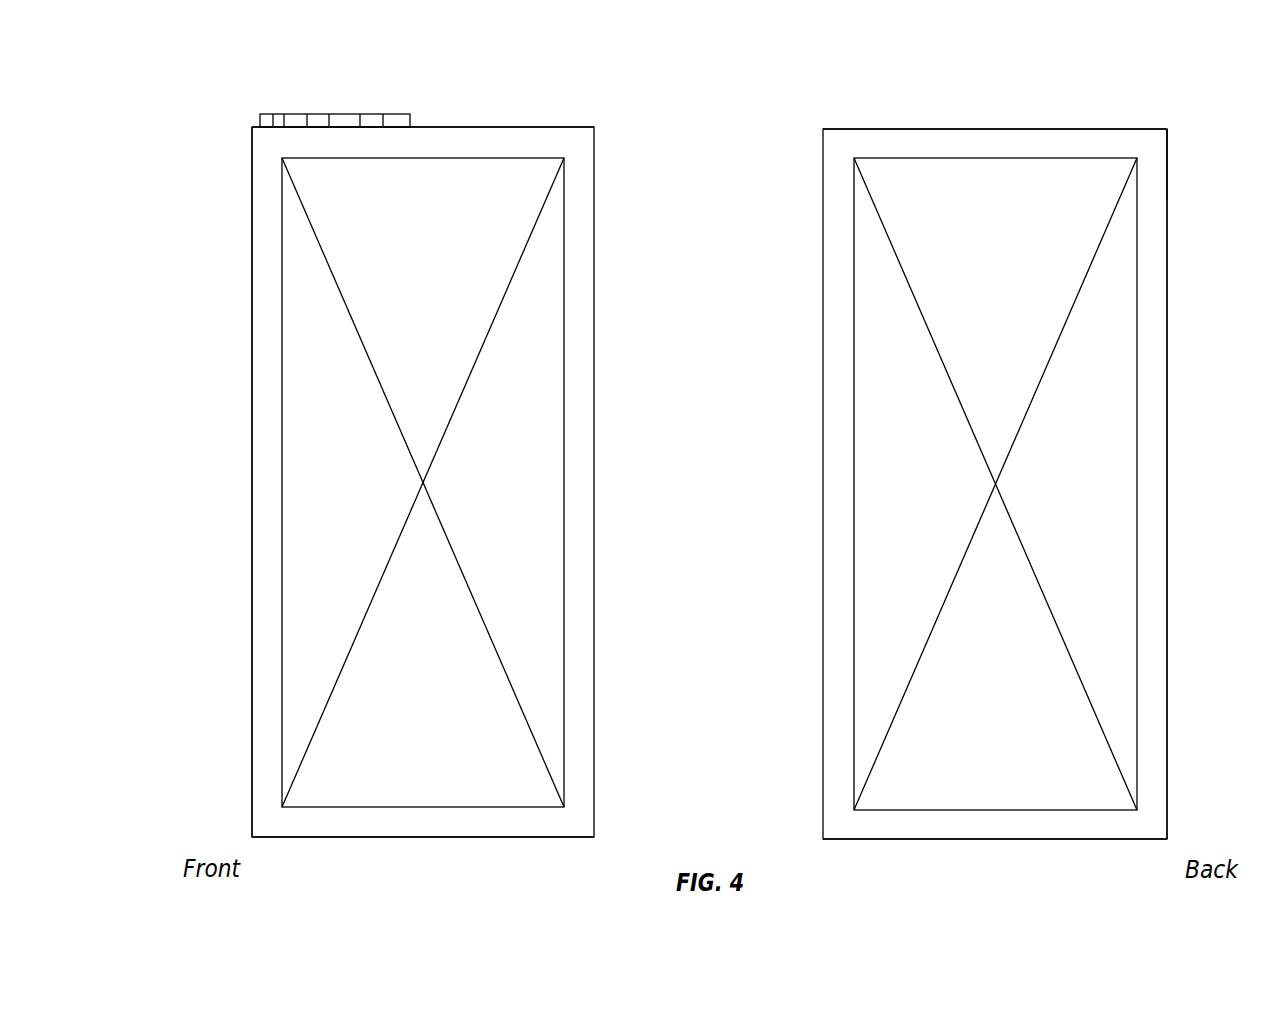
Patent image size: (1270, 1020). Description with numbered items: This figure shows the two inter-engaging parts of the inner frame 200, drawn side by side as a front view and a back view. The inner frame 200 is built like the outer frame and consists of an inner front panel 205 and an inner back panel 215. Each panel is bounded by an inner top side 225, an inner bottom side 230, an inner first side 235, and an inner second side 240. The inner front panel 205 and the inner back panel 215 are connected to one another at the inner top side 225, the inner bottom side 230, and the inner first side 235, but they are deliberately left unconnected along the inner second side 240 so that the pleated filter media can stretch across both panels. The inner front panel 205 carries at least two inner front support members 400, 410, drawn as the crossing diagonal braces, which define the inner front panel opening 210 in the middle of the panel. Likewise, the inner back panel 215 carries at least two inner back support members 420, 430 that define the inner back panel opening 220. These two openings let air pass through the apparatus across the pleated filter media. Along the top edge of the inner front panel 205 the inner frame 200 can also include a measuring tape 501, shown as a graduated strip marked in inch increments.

The inner frame 200 is at (230, 60).
The inner front panel 205 is at (260, 127).
The inner front panel opening 210 is at (333, 510).
The inner back panel 215 is at (1142, 129).
The inner back panel opening 220 is at (1088, 513).
The inner top side 225 is at (993, 129).
The inner bottom side 230 is at (423, 838).
The inner first side 235 is at (252, 483).
The inner second side 240 is at (594, 328).
The inner front support member 400 is at (318, 723).
The inner front support member 410 is at (317, 240).
The inner back support member 420 is at (1102, 727).
The inner back support member 430 is at (1102, 240).
The measuring tape 501 is at (405, 114).